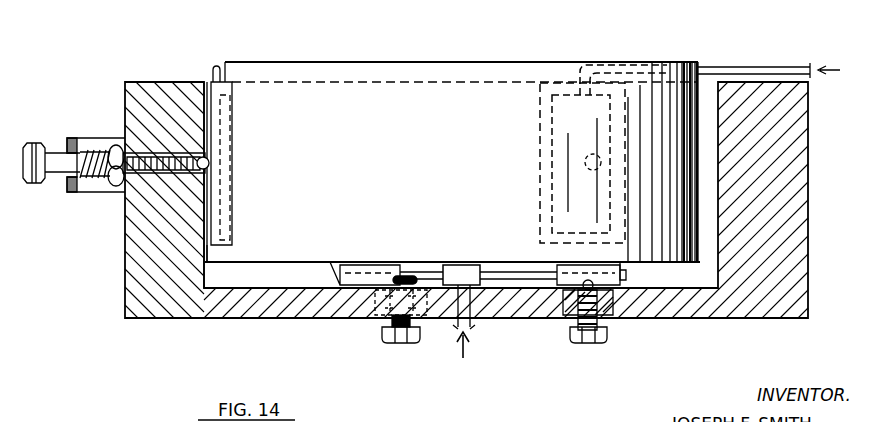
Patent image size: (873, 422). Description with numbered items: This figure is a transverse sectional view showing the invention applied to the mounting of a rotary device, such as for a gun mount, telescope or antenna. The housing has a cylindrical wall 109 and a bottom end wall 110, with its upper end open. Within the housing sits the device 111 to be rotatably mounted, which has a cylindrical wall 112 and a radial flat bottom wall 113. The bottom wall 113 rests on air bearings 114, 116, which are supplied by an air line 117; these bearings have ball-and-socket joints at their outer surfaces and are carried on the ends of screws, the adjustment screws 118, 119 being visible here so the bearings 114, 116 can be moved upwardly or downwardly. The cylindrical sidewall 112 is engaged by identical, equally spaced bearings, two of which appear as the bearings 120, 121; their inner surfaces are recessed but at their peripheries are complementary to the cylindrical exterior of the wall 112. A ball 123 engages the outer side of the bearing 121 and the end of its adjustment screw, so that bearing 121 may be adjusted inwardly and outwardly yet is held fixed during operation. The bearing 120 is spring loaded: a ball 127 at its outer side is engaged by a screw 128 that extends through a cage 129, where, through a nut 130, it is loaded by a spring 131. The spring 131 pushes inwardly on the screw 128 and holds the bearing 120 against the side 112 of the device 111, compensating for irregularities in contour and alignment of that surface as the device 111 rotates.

The cylindrical wall 109 is at (788, 167).
The bottom end wall 110 is at (660, 314).
The device 111 is at (566, 40).
The cylindrical wall 112 is at (385, 86).
The radial flat bottom wall 113 is at (287, 264).
The air bearing 114 is at (342, 275).
The air bearing 116 is at (625, 272).
The air line 117 is at (473, 318).
The adjustment screw 118 is at (405, 347).
The adjustment screw 119 is at (590, 347).
The bearing 120 is at (230, 187).
The bearing 121 is at (547, 163).
The ball 123 is at (588, 158).
The ball 127 is at (210, 157).
The screw 128 is at (50, 173).
The cage 129 is at (95, 190).
The nut 130 is at (117, 182).
The spring 131 is at (80, 153).